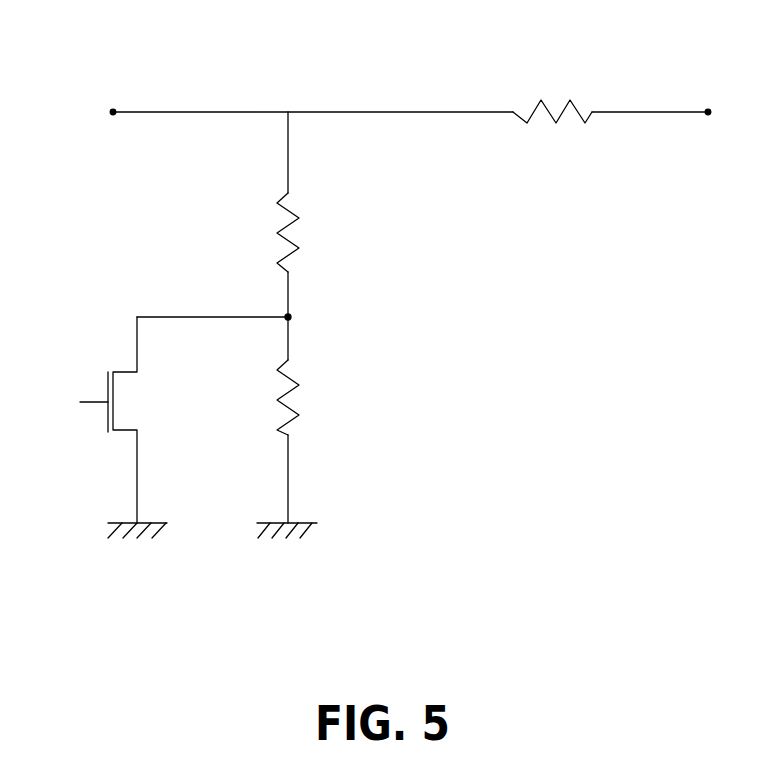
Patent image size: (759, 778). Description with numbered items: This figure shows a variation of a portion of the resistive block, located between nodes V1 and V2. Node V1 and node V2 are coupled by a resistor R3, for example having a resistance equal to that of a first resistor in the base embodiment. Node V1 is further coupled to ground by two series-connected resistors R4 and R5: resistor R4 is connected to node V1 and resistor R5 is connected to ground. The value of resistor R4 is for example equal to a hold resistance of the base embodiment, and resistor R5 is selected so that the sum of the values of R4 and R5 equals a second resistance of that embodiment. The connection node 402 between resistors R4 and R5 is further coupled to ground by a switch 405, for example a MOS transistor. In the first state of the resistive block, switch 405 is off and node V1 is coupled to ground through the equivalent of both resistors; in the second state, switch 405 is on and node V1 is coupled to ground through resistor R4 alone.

The connection node 402 is at (331, 310).
The switch 405 is at (110, 346).
The resistor R3 is at (552, 99).
The resistor R4 is at (269, 232).
The resistor R5 is at (269, 397).
The node V1 is at (112, 98).
The node V2 is at (722, 97).